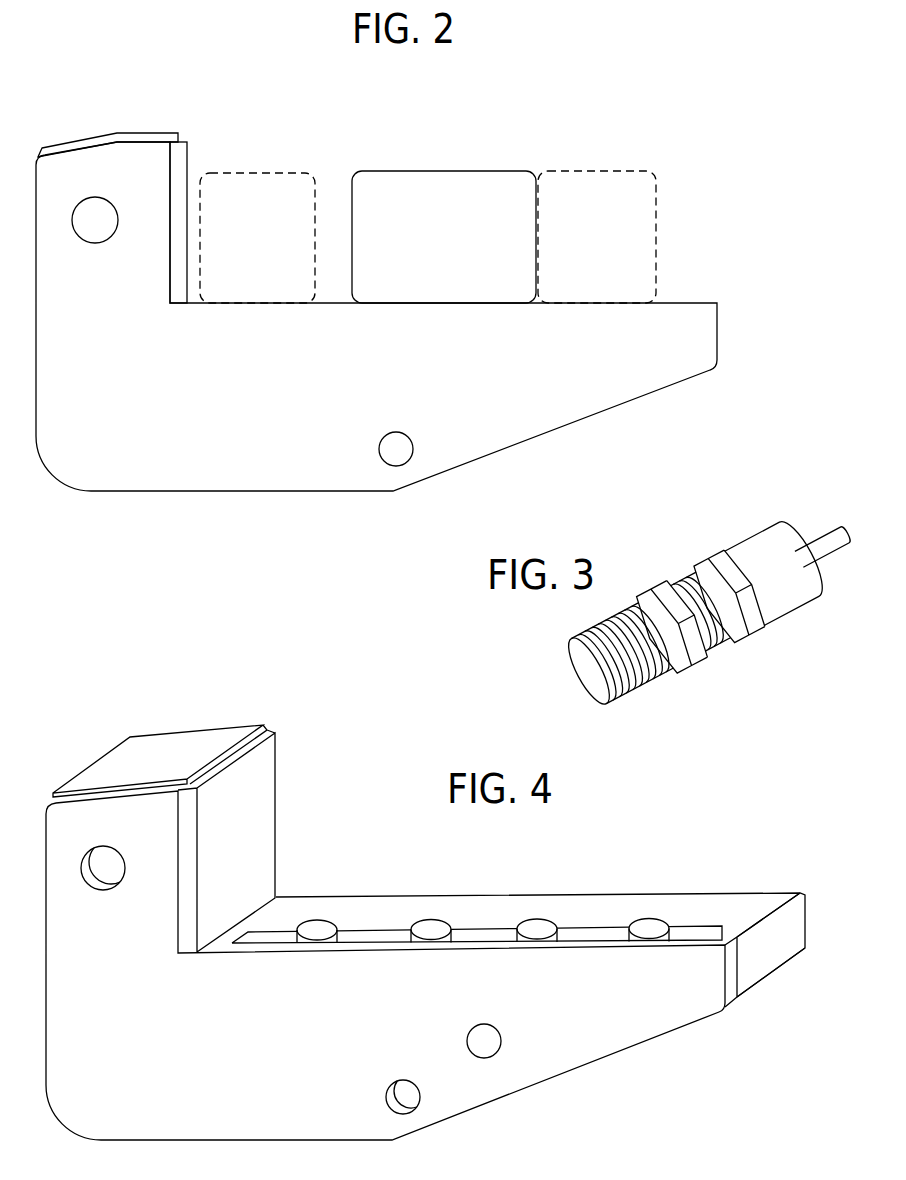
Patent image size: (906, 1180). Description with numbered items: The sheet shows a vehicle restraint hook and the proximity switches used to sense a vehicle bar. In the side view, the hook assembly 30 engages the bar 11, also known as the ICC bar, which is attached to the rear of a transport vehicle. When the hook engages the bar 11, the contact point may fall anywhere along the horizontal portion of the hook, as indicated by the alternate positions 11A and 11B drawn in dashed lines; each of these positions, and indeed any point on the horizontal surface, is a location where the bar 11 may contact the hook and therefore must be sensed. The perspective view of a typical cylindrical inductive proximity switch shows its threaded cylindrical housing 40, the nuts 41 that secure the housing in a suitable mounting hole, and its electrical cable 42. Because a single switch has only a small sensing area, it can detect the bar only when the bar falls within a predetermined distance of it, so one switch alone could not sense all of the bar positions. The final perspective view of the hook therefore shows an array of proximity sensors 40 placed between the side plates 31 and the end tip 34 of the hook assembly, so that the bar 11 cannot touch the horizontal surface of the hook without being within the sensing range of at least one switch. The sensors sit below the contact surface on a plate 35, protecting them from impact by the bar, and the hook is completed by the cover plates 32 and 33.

In FIG. 2, the bar 11 is at (437, 171).
In FIG. 2, the alternate bar position 11A is at (273, 171).
In FIG. 2, the alternate bar position 11B is at (593, 171).
In FIG. 2, the hook assembly 30 is at (627, 402).
In FIG. 4, the hook assembly 30 is at (662, 1023).
In FIG. 4, the side plates 31 is at (540, 984).
In FIG. 2, the cover plate 32 is at (159, 133).
In FIG. 4, the cover plate 32 is at (240, 730).
In FIG. 2, the cover plate 33 is at (189, 170).
In FIG. 4, the cover plate 33 is at (263, 785).
In FIG. 4, the end tip 34 is at (767, 963).
In FIG. 4, the plate 35 is at (697, 928).
In FIG. 3, the threaded cylindrical housing 40 is at (755, 553).
In FIG. 4, the threaded cylindrical housing 40 is at (322, 922).
In FIG. 3, the nuts 41 is at (660, 583).
In FIG. 3, the electrical cable 42 is at (813, 535).